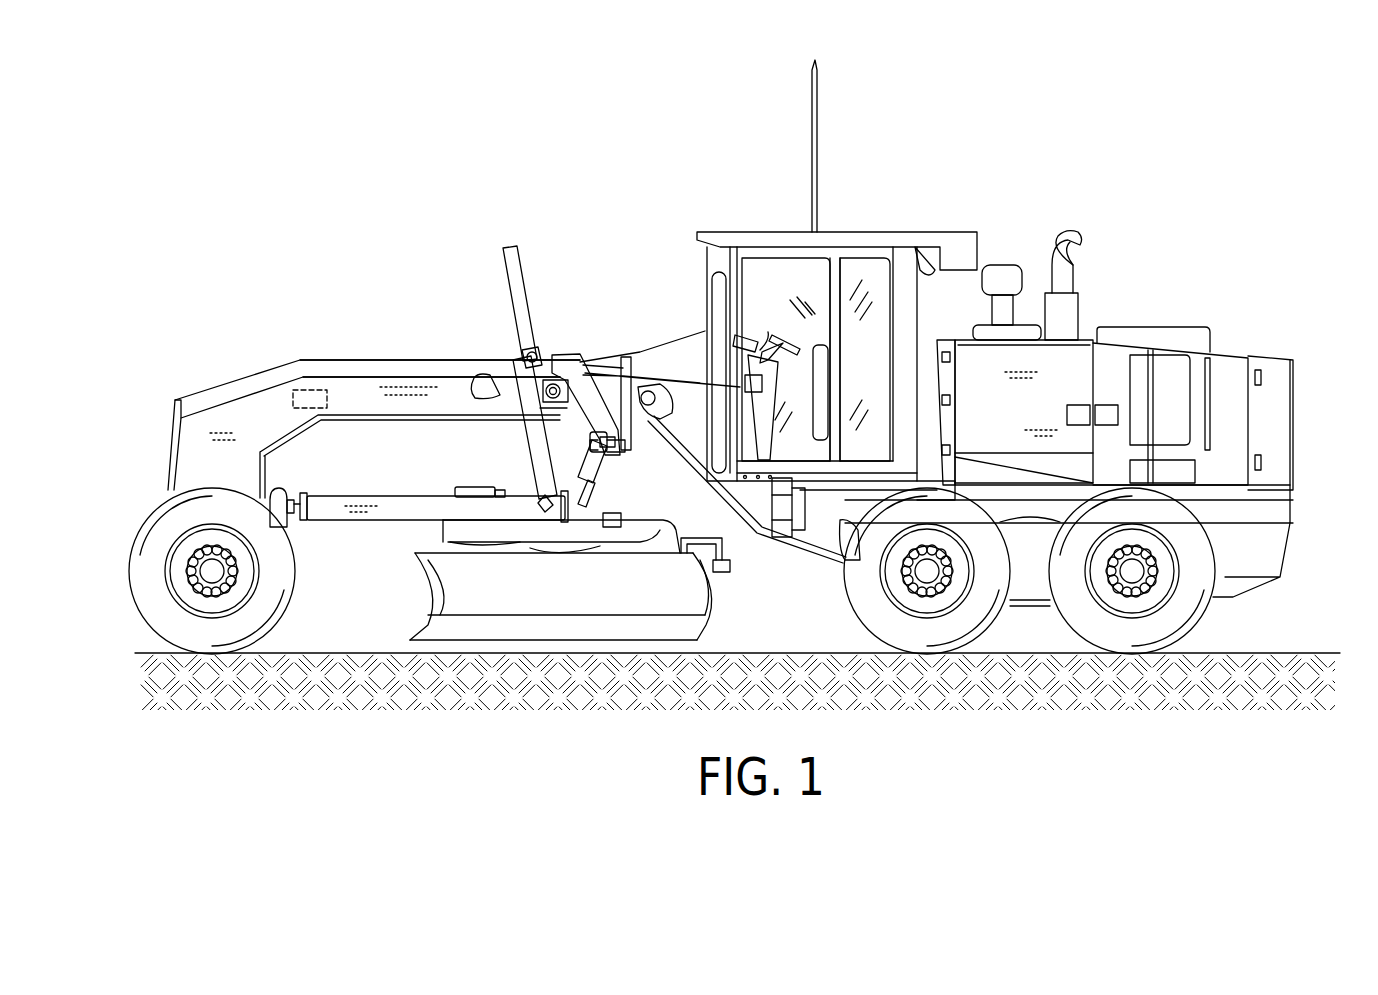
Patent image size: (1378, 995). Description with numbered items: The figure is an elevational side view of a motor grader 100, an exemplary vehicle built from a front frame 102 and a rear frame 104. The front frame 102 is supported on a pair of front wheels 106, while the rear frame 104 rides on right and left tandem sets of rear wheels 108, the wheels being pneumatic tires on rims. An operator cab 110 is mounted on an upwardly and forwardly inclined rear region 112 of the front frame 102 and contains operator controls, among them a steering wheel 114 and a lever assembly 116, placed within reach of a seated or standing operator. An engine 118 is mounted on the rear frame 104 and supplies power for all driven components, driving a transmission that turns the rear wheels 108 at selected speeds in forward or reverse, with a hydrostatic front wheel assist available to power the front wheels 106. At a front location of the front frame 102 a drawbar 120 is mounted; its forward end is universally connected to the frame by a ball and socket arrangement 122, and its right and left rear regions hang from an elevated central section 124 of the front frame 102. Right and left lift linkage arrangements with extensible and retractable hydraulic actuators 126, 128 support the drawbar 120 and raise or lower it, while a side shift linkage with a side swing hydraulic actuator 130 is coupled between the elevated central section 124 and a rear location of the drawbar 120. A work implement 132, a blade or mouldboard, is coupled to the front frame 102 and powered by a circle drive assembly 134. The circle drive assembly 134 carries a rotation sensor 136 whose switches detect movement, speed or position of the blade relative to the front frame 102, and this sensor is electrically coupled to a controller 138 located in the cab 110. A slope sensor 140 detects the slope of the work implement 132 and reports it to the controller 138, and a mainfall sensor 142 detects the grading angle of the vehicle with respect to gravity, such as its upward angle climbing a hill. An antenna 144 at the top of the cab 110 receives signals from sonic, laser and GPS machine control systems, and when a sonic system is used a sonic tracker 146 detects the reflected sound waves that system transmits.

The motor grader 100 is at (1140, 127).
The front frame 102 is at (206, 357).
The rear frame 104 is at (1262, 596).
The front wheels 106 is at (152, 610).
The rear wheels 108 is at (868, 612).
The operator cab 110 is at (870, 223).
The upwardly and forwardly inclined rear region 112 is at (715, 500).
The steering wheel 114 is at (770, 330).
The lever assembly 116 is at (740, 338).
The engine 118 is at (1110, 348).
The drawbar 120 is at (378, 512).
The ball and socket arrangement 122 is at (298, 489).
The elevated central section 124 is at (388, 358).
The right hydraulic actuator 126 is at (515, 308).
The left hydraulic actuator 128 is at (505, 272).
The side swing hydraulic actuator 130 is at (578, 478).
The work implement 132 is at (420, 615).
The circle drive assembly 134 is at (458, 476).
The rotation sensor 136 is at (483, 485).
The controller 138 is at (744, 383).
The slope sensor 140 is at (612, 511).
The mainfall sensor 142 is at (320, 388).
The antenna 144 is at (811, 101).
The sonic tracker 146 is at (728, 574).